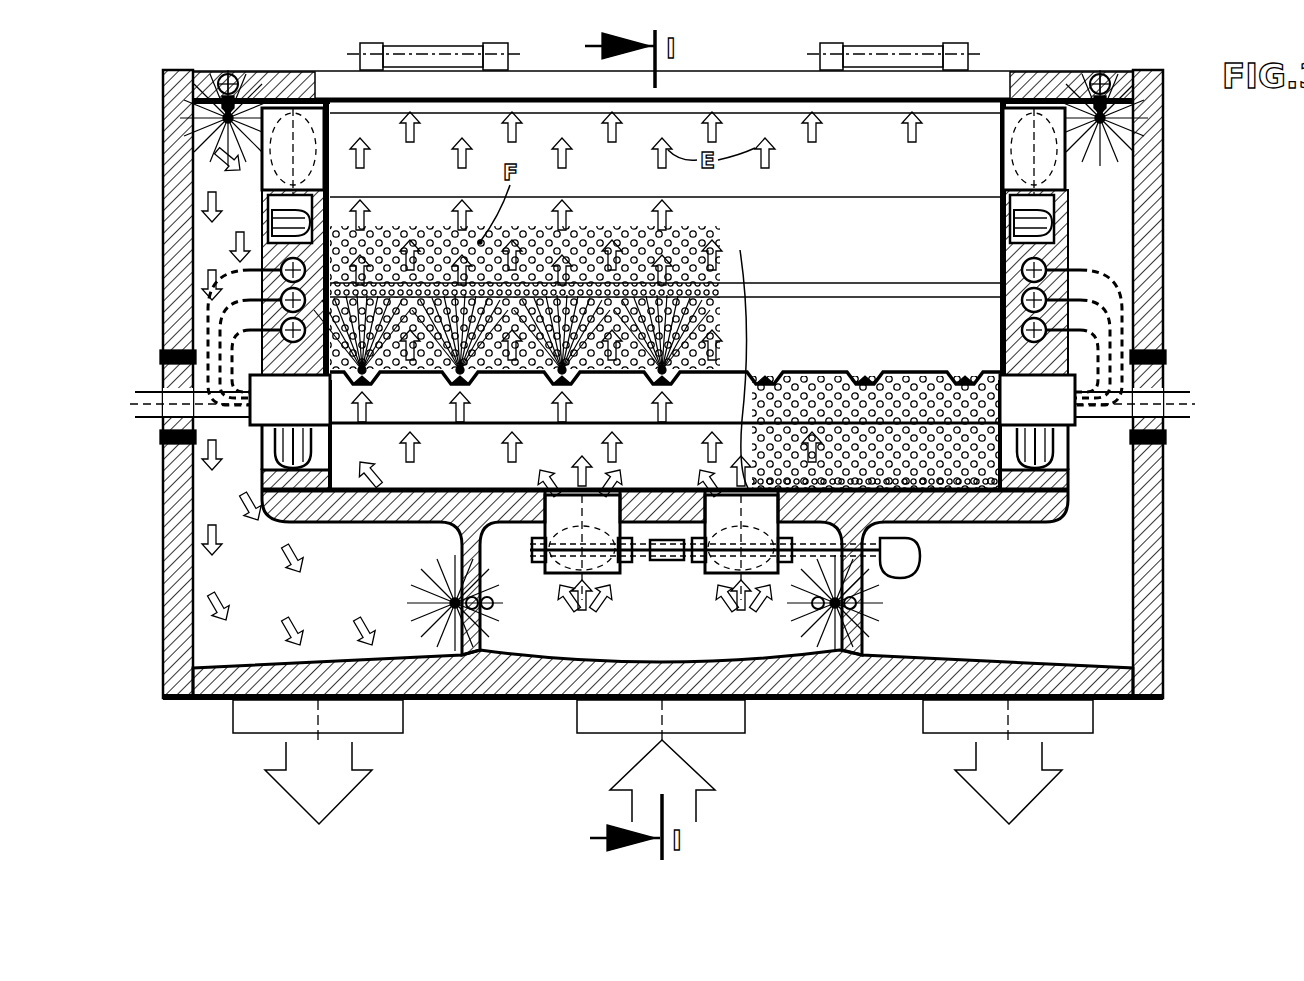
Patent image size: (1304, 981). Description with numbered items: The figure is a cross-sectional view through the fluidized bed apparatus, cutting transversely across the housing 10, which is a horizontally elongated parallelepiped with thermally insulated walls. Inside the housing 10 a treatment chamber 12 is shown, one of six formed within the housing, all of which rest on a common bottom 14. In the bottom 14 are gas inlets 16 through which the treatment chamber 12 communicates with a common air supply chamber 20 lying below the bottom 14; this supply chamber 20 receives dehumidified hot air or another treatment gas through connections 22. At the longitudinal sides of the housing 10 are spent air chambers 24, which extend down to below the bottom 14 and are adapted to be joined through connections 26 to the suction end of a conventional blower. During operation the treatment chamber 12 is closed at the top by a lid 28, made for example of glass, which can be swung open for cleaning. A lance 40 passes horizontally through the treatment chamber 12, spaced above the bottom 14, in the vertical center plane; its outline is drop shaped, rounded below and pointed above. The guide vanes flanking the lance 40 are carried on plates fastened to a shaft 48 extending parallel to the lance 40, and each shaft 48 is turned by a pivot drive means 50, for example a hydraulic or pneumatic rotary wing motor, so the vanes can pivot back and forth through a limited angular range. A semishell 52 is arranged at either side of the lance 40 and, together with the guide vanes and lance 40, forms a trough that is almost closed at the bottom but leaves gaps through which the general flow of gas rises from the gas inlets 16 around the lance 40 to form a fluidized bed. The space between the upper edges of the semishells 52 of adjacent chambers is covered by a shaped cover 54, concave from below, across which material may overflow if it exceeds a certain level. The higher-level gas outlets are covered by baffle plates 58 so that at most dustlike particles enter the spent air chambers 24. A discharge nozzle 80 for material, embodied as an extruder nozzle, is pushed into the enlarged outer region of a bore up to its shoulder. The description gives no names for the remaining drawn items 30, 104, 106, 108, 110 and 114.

The housing 10 is at (158, 192).
The treatment chamber 12 is at (833, 251).
The common bottom 14 is at (662, 488).
The gas inlet 16 is at (595, 575).
The common air supply chamber 20 is at (678, 627).
The connection 22 is at (600, 728).
The spent air chamber 24 is at (268, 600).
The connection 26 is at (250, 730).
The lid 28 is at (730, 82).
The air distribution space 30 is at (405, 492).
The lance 40 is at (816, 380).
The shaft 48 is at (1022, 480).
The pivot drive means 50 is at (280, 452).
The semishell 52 is at (958, 305).
The shaped cover 54 is at (882, 290).
The baffle plate 58 is at (919, 188).
The discharge nozzle 80 is at (965, 375).
The belt cleat 104 is at (764, 378).
The fluid supply pipe 106 is at (1130, 262).
The fluid supply pipe 108 is at (1125, 302).
The fluid supply pipe 110 is at (1125, 330).
The spray nozzle 114 is at (240, 100).